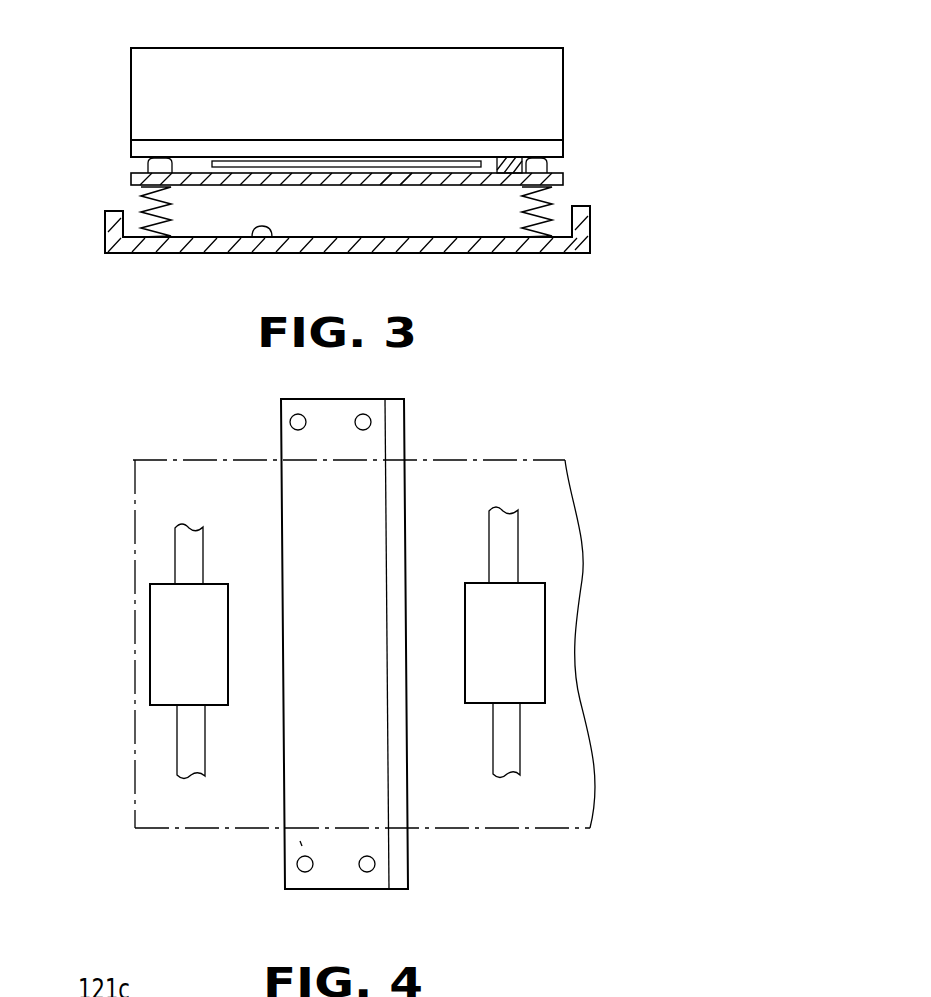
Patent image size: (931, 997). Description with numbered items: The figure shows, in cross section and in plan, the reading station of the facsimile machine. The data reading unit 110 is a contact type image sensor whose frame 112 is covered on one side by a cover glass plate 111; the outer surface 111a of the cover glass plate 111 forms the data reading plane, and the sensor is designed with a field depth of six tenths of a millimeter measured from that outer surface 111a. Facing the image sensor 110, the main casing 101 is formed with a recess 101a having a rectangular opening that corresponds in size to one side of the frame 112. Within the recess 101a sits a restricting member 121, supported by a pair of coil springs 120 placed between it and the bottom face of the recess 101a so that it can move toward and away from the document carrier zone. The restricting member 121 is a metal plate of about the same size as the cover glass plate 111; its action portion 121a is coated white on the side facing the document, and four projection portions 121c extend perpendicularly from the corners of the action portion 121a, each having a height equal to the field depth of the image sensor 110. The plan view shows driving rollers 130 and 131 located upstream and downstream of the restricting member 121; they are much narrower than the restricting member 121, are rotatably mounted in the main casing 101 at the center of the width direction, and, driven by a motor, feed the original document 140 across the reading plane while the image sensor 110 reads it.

In FIG. 3, the data reading unit 110 is at (583, 58).
In FIG. 3, the frame 112 is at (131, 72).
In FIG. 3, the cover glass plate 111 is at (553, 147).
In FIG. 3, the outer surface 111a is at (497, 176).
In FIG. 3, the original document 140 is at (423, 157).
In FIG. 4, the original document 140 is at (513, 460).
In FIG. 3, the restricting member 121 is at (126, 181).
In FIG. 4, the restricting member 121 is at (432, 415).
In FIG. 3, the action portion 121a is at (390, 186).
In FIG. 4, the action portion 121a is at (300, 841).
In FIG. 3, the projection portions 121c is at (150, 163).
In FIG. 4, the projection portions 121c is at (363, 413).
In FIG. 3, the coil springs 120 is at (155, 254).
In FIG. 3, the main casing 101 is at (330, 246).
In FIG. 3, the recess 101a is at (262, 237).
In FIG. 4, the driving roller 130 is at (545, 677).
In FIG. 4, the driving roller 131 is at (168, 686).